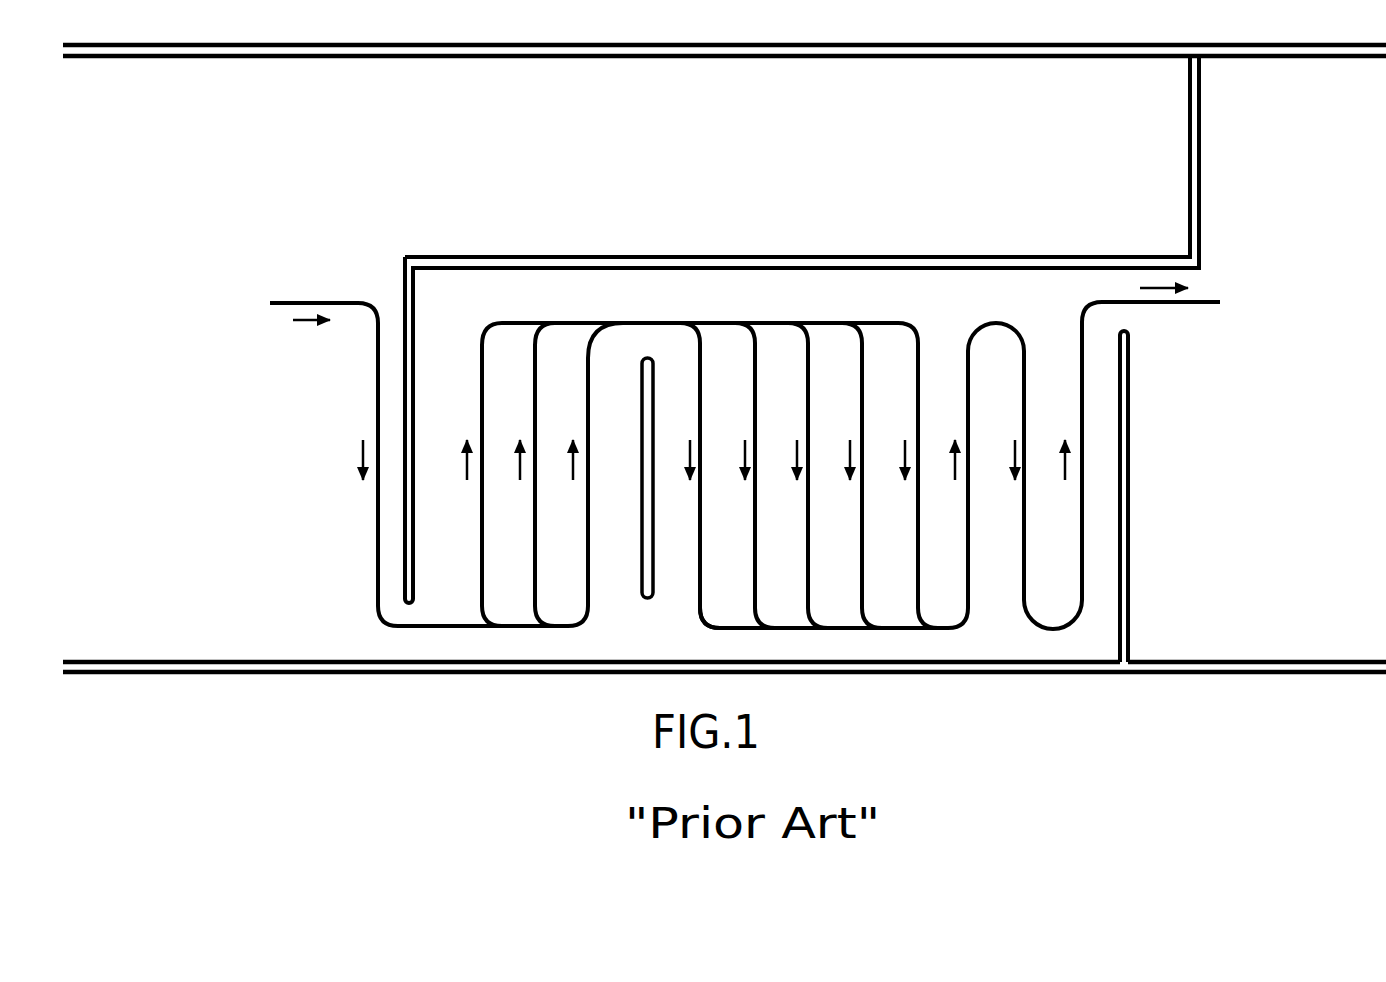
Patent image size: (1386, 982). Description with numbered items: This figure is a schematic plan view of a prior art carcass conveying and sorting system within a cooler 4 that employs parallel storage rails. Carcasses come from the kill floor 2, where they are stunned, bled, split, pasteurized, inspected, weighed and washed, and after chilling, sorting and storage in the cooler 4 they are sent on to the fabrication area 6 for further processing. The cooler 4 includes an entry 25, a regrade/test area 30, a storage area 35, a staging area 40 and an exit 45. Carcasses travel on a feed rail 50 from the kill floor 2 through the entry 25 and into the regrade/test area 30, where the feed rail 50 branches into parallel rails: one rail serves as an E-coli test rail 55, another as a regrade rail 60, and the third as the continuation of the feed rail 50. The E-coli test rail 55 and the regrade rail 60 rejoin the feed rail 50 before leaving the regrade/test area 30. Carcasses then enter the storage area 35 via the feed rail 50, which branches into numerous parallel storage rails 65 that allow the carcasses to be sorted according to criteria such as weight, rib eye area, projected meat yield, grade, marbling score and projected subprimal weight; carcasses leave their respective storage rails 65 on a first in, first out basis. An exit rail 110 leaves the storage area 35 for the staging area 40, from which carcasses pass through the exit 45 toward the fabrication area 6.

The kill floor 2 is at (260, 397).
The cooler 4 is at (720, 152).
The fabrication area 6 is at (1362, 328).
The entry 25 is at (378, 634).
The regrade/test area 30 is at (533, 245).
The storage area 35 is at (822, 245).
The staging area 40 is at (1040, 247).
The exit 45 is at (1146, 322).
The feed rail 50 is at (368, 386).
The E-coli test rail 55 is at (477, 398).
The regrade rail 60 is at (530, 526).
The storage rails 65 is at (914, 504).
The exit rail 110 is at (1002, 316).